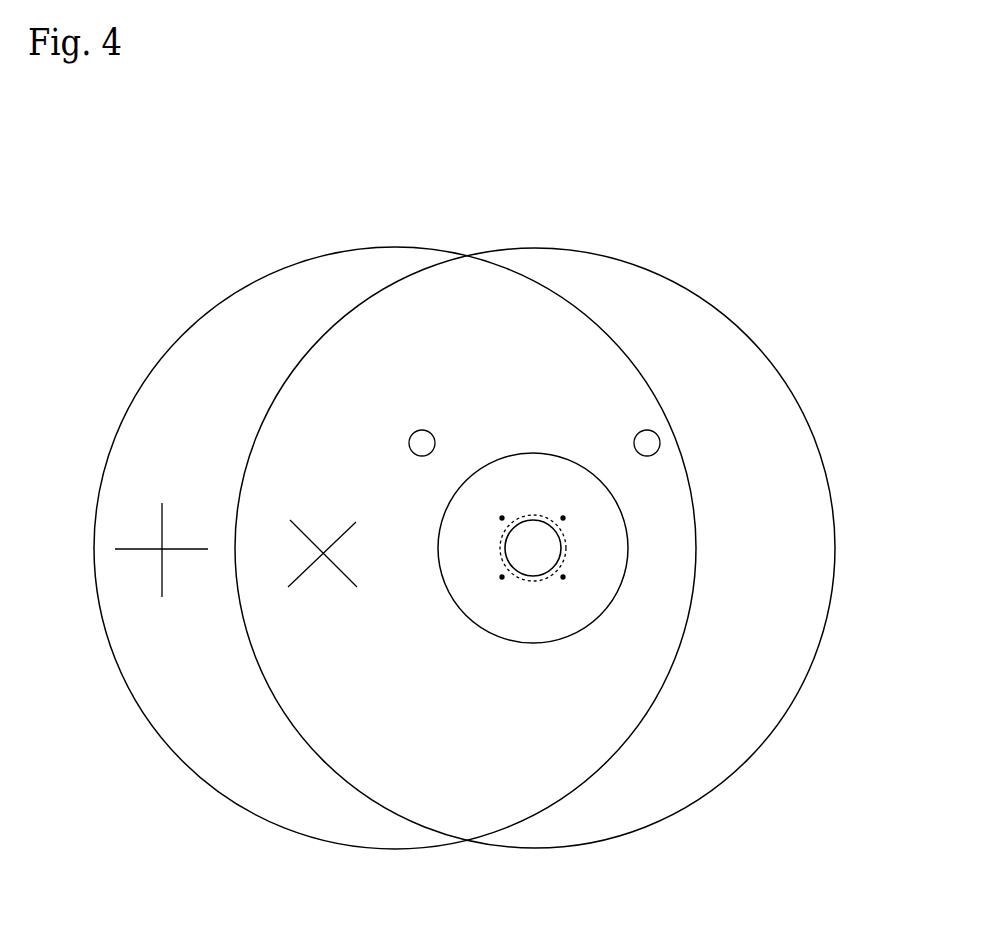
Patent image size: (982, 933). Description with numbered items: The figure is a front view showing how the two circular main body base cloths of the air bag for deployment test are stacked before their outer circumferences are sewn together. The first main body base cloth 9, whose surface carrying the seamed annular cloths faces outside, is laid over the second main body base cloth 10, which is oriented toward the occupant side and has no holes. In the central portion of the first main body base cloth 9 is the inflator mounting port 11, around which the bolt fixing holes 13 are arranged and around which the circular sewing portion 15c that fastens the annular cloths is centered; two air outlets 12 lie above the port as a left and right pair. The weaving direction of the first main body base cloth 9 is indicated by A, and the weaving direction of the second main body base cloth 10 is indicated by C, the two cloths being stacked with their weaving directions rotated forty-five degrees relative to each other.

The first main body base cloth 9 is at (528, 347).
The second main body base cloth 10 is at (275, 333).
The inflator mounting port 11 is at (533, 548).
The air outlet 12 is at (645, 430).
The bolt fixing hole 13 is at (570, 578).
The sewing portion 15c is at (520, 583).
The weaving direction of first main body base cloth A is at (323, 518).
The weaving direction of second main body base cloth C is at (162, 495).